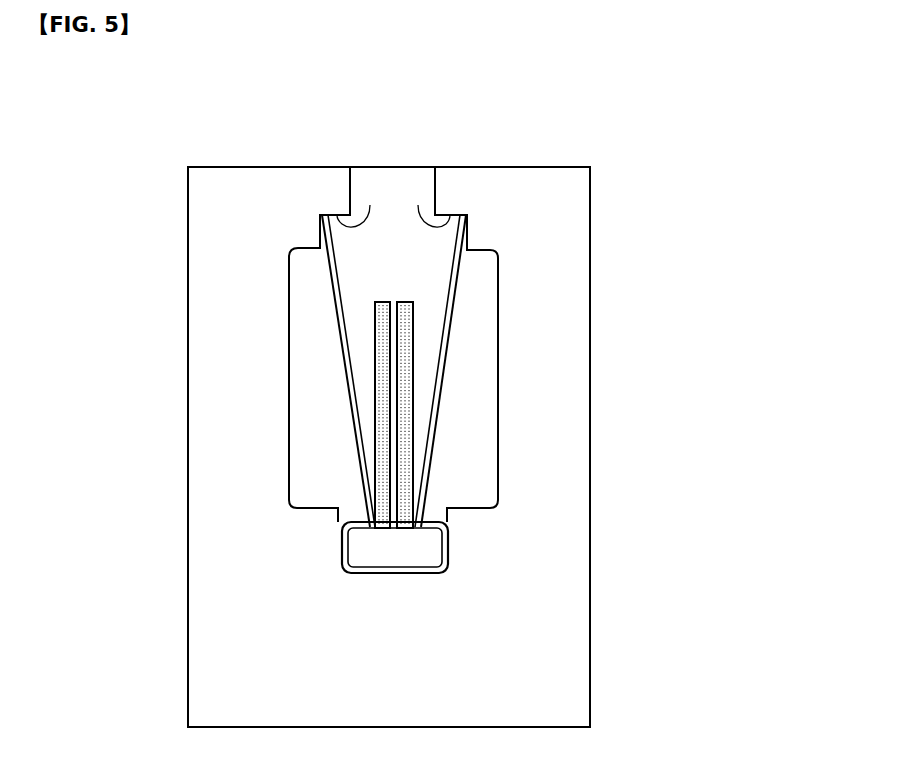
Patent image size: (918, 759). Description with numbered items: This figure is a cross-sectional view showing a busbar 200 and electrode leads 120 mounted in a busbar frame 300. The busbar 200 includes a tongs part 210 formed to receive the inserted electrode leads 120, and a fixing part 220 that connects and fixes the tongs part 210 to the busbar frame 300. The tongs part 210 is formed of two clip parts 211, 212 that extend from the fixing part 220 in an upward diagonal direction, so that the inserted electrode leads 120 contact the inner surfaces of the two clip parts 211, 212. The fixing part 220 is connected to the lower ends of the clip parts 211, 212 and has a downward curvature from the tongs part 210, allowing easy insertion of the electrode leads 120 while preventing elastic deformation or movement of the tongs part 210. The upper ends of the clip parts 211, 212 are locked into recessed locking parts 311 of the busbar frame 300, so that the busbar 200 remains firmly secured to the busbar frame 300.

The electrode leads 120 is at (383, 357).
The busbar 200 is at (499, 327).
The tongs part 210 is at (469, 304).
The clip part 211 is at (327, 267).
The clip part 212 is at (460, 258).
The fixing part 220 is at (445, 544).
The busbar frame 300 is at (232, 622).
The locking part 311 is at (418, 205).